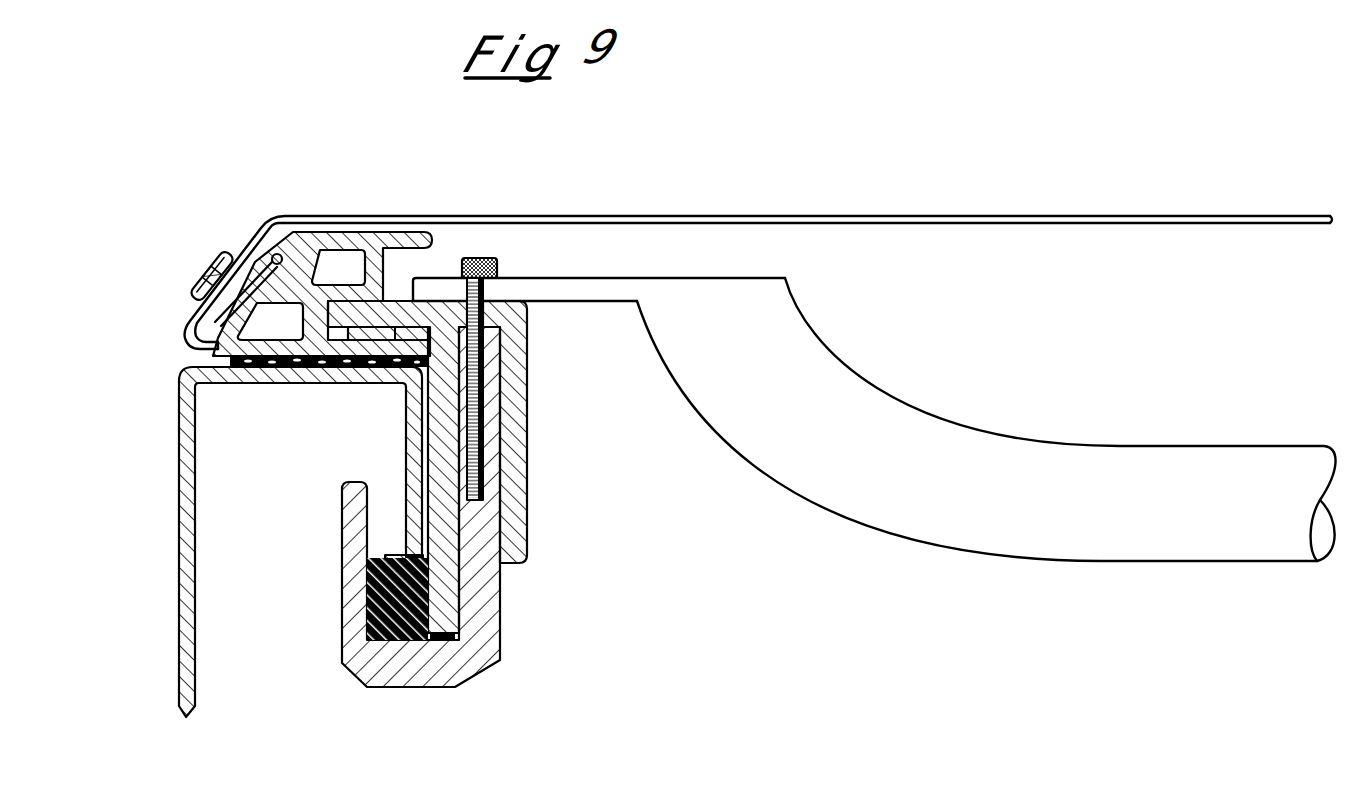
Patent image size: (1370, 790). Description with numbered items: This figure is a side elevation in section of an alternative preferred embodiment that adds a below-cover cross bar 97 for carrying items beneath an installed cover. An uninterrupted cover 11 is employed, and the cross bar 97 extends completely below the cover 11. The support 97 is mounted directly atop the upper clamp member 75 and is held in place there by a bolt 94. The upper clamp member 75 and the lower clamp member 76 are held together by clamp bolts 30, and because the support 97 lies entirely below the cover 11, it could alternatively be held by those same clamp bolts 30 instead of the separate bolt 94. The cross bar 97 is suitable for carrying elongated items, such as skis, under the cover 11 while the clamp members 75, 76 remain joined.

The cover 11 is at (931, 217).
The clamp bolt 30 is at (485, 373).
The upper clamp member 75 is at (514, 447).
The lower clamp member 76 is at (487, 618).
The bolt 94 is at (485, 256).
The below-cover cross bar 97 is at (906, 500).